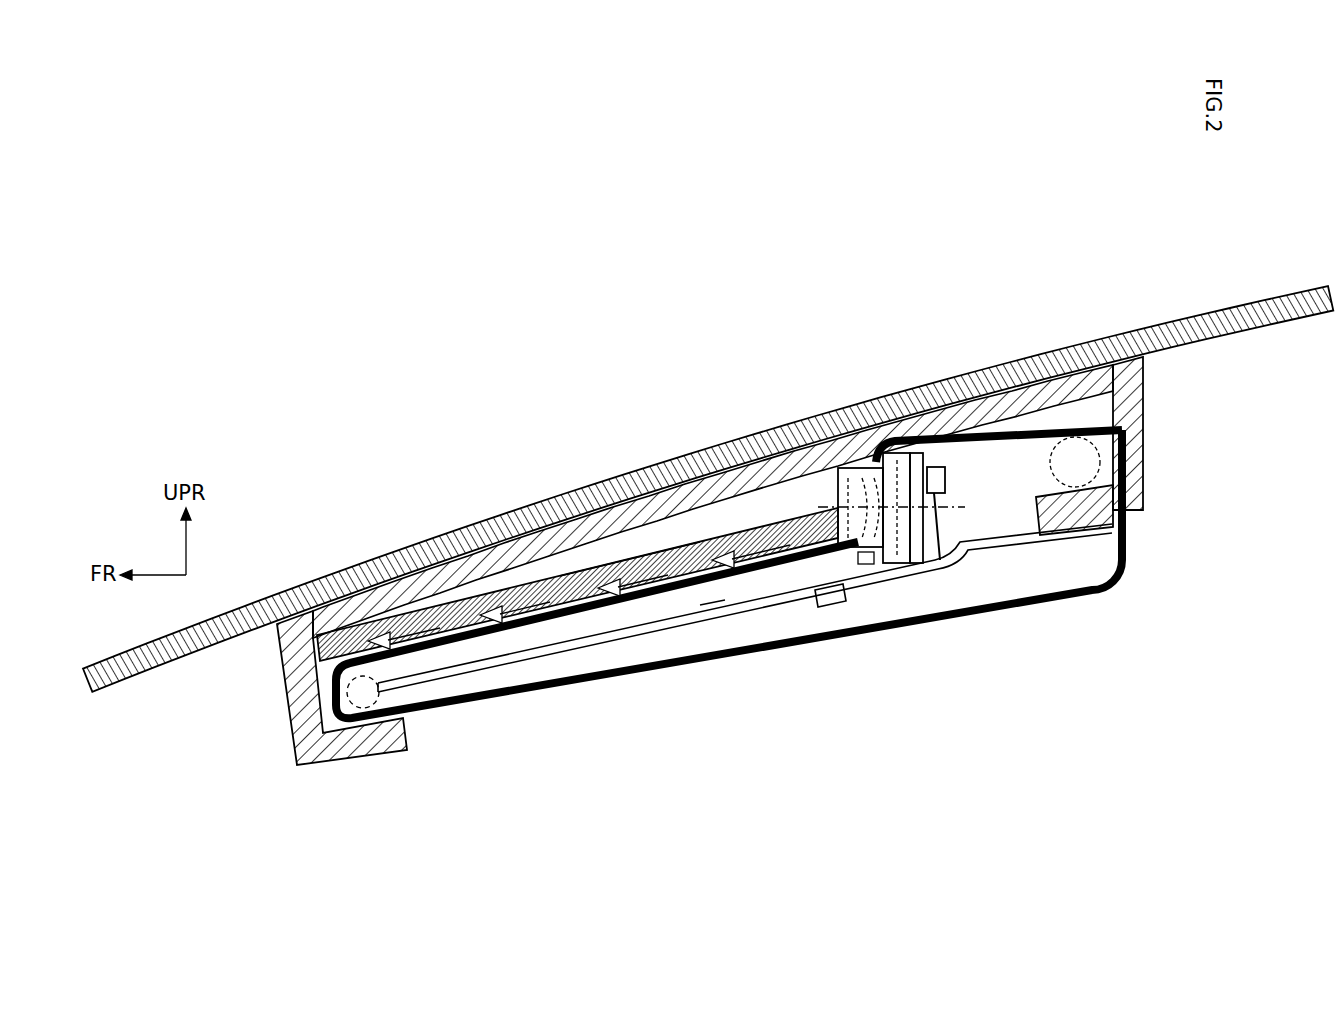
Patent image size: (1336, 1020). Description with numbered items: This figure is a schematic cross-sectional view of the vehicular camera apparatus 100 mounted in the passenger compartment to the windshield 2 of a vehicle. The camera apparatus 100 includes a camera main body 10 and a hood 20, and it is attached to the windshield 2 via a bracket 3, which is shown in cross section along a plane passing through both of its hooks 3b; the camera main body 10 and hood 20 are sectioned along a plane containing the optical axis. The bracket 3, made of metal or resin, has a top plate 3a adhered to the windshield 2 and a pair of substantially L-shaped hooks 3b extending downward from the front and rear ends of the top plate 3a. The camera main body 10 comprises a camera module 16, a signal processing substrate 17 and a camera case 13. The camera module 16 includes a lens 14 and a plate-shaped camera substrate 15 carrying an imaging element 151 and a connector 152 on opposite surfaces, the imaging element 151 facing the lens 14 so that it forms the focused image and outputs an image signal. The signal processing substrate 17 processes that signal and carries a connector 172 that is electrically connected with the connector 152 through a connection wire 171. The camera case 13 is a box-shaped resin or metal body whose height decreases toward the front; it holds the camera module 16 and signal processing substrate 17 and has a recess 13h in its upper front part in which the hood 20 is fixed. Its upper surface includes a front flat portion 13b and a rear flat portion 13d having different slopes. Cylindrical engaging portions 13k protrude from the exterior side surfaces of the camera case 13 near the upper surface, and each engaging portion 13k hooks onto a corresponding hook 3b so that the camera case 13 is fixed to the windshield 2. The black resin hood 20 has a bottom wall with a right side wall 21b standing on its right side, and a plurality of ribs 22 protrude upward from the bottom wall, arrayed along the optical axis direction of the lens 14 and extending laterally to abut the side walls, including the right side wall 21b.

The windshield 2 is at (458, 528).
The bracket 3 is at (268, 686).
The top plate 3a is at (638, 468).
The hook 3b is at (282, 725).
The camera main body 10 is at (1078, 594).
The camera case 13 is at (1128, 566).
The front flat portion 13b is at (545, 575).
The rear flat portion 13d is at (1010, 430).
The recess 13h is at (712, 612).
The engaging portion 13k is at (405, 720).
The lens 14 is at (845, 466).
The camera substrate 15 is at (905, 452).
The camera module 16 is at (866, 572).
The signal processing substrate 17 is at (1025, 532).
The hood 20 is at (345, 602).
The right side wall 21b is at (735, 535).
The rib 22 is at (372, 628).
The camera apparatus 100 is at (1172, 479).
The imaging element 151 is at (870, 468).
The connector 152 is at (935, 466).
The connection wire 171 is at (915, 583).
The connector 172 is at (820, 600).